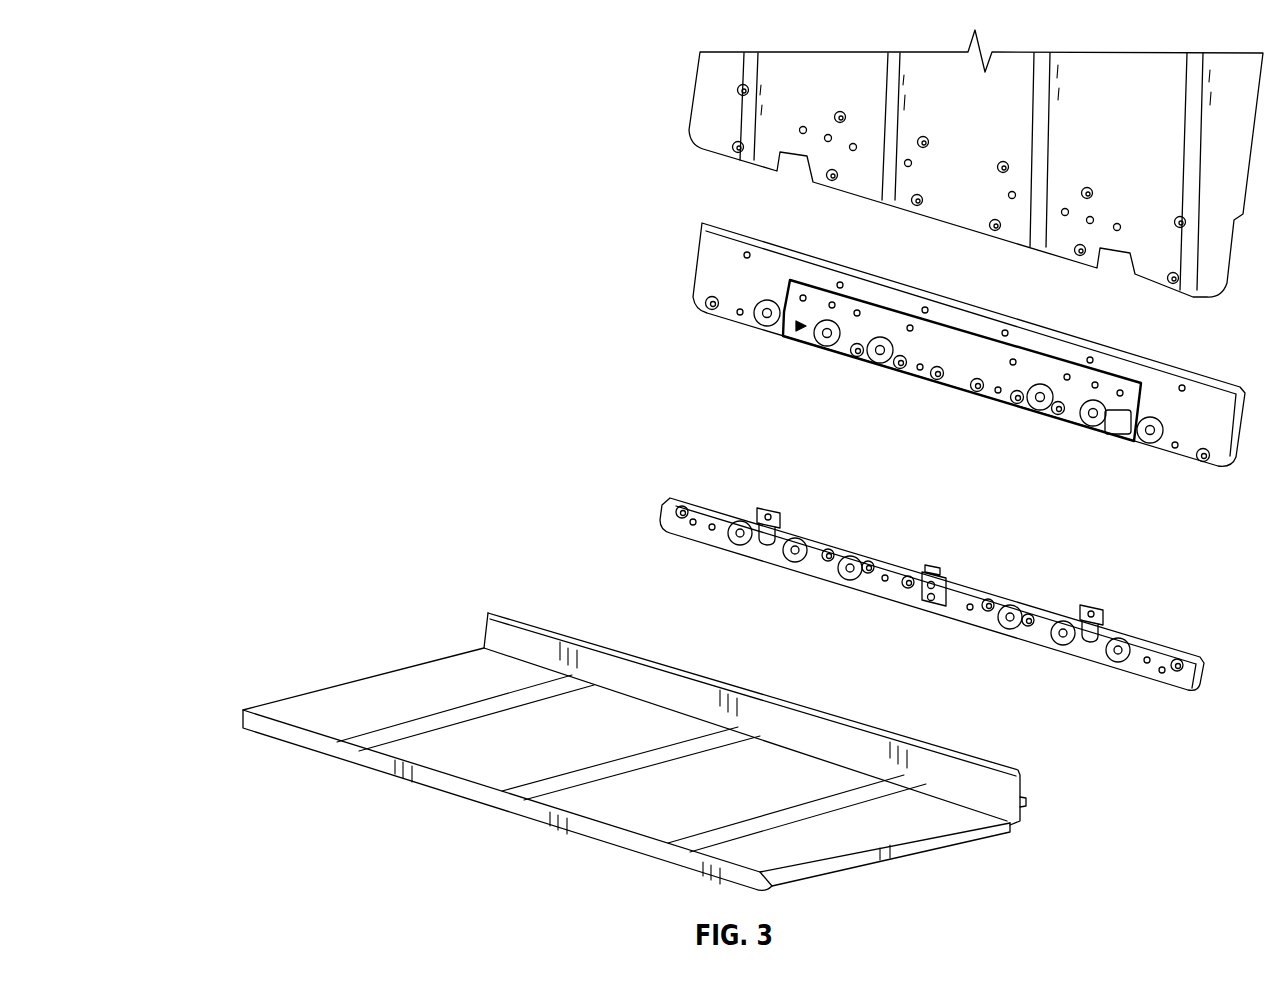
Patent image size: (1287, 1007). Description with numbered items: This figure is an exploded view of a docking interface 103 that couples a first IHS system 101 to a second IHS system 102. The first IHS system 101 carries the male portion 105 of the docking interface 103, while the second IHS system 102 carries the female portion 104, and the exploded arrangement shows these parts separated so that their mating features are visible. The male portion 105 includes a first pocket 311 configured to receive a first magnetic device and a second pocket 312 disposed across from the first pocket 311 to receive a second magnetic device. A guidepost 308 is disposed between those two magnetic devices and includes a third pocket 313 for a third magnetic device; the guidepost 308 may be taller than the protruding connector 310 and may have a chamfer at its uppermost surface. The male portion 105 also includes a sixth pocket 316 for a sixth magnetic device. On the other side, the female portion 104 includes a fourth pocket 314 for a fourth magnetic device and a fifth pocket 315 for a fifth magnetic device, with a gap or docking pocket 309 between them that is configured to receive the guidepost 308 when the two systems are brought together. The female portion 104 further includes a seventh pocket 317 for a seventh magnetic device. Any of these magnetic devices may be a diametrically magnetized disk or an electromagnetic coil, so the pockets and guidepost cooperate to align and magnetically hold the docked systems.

The first IHS system 101 is at (381, 692).
The second IHS system 102 is at (708, 108).
The docking interface 103 is at (527, 370).
The female portion 104 is at (929, 332).
The male portion 105 is at (897, 562).
The guidepost 308 is at (743, 505).
The docking pocket 309 is at (793, 285).
The protruding connector 310 is at (933, 563).
The first pocket 311 is at (723, 532).
The second pocket 312 is at (780, 552).
The third pocket 313 is at (753, 508).
The fourth pocket 314 is at (753, 313).
The fifth pocket 315 is at (805, 338).
The sixth pocket 316 is at (832, 570).
The seventh pocket 317 is at (855, 357).